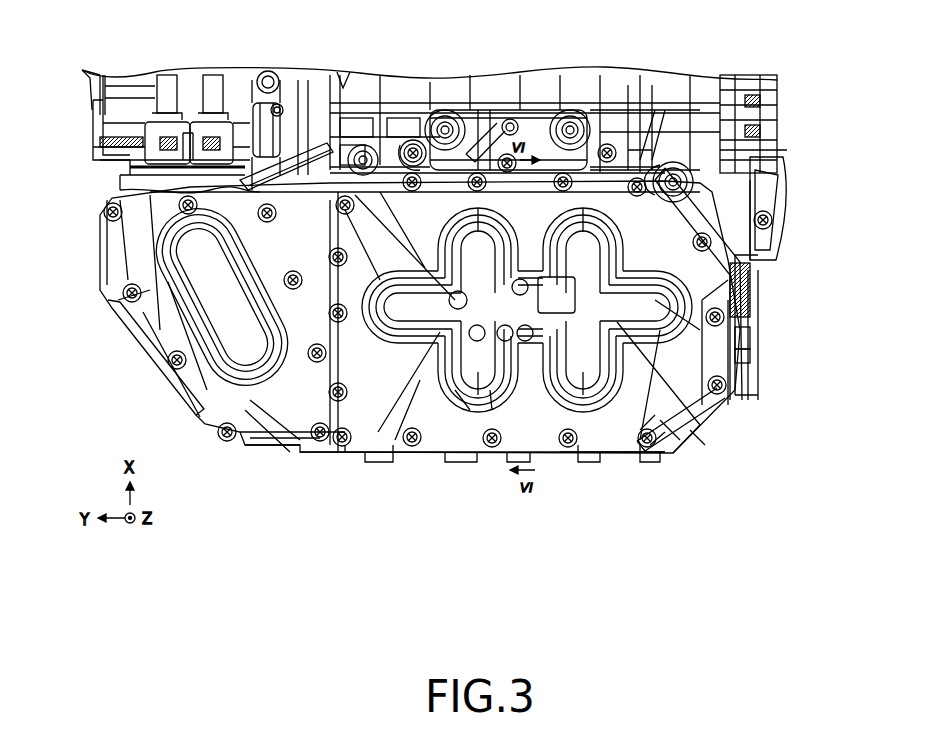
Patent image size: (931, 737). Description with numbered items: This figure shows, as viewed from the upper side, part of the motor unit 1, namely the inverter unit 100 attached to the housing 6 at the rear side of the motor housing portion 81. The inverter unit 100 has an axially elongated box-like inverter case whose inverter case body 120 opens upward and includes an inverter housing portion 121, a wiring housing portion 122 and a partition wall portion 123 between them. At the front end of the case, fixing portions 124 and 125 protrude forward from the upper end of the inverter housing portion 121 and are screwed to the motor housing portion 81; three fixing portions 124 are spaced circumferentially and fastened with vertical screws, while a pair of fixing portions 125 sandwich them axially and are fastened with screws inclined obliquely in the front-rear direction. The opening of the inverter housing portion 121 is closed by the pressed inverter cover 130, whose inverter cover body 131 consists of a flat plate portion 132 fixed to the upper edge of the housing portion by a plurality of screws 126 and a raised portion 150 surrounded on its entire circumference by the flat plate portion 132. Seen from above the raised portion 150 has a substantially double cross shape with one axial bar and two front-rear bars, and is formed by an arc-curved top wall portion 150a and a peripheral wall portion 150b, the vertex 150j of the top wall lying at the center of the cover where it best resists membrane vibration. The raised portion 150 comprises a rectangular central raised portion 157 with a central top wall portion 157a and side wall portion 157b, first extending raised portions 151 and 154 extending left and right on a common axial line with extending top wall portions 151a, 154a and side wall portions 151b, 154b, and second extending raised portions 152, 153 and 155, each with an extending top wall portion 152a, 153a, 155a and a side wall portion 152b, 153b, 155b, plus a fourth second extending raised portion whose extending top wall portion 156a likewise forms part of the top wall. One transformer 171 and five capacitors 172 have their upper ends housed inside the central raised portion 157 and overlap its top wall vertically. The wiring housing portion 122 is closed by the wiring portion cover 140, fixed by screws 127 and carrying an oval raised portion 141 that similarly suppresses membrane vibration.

The motor unit 1 is at (780, 62).
The housing 6 is at (745, 78).
The motor housing portion 81 is at (640, 150).
The inverter unit 100 is at (745, 420).
The inverter case body 120 is at (260, 80).
The inverter housing portion 121 is at (727, 383).
The wiring housing portion 122 is at (135, 352).
The partition wall portion 123 is at (300, 420).
The fixing portion 124 is at (412, 140).
The fixing portion 125 is at (303, 84).
The screw 126 is at (766, 256).
The screw 127 is at (122, 285).
The inverter cover 130 is at (570, 455).
The inverter cover body 131 is at (781, 506).
The flat plate portion 132 is at (700, 442).
The wiring portion cover 140 is at (170, 400).
The raised portion 141 is at (188, 318).
The raised portion 150 is at (752, 470).
The top wall portion 150a is at (645, 425).
The peripheral wall portion 150b is at (655, 447).
The vertex 150j is at (518, 122).
The first extending raised portion 151 is at (398, 516).
The extending top wall portion 151a is at (394, 455).
The side wall portion 151b is at (345, 455).
The second extending raised portion 152 is at (498, 44).
The extending top wall portion 152a is at (444, 110).
The side wall portion 152b is at (480, 108).
The second extending raised portion 153 is at (671, 44).
The extending top wall portion 153a is at (648, 108).
The side wall portion 153b is at (592, 118).
The first extending raised portion 154 is at (803, 328).
The extending top wall portion 154a is at (752, 335).
The side wall portion 154b is at (752, 356).
The second extending raised portion 155 is at (506, 516).
The extending top wall portion 155a is at (468, 400).
The side wall portion 155b is at (492, 412).
The extending top wall portion 156a is at (640, 372).
The central raised portion 157 is at (565, 516).
The central top wall portion 157a is at (582, 458).
The side wall portion 157b is at (628, 458).
The transformer 171 is at (745, 218).
The capacitor 172 is at (356, 80).